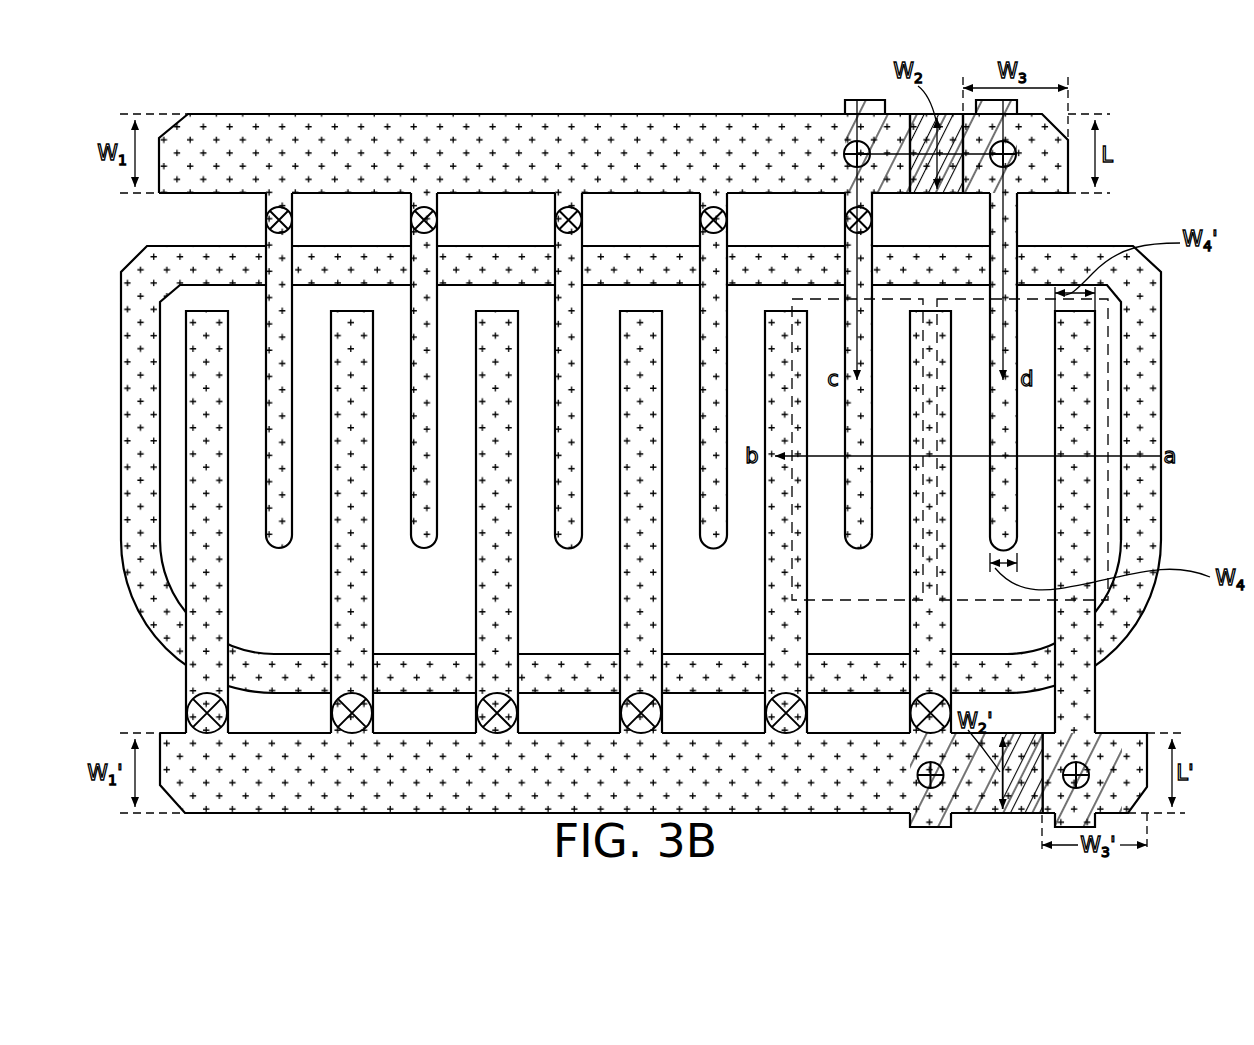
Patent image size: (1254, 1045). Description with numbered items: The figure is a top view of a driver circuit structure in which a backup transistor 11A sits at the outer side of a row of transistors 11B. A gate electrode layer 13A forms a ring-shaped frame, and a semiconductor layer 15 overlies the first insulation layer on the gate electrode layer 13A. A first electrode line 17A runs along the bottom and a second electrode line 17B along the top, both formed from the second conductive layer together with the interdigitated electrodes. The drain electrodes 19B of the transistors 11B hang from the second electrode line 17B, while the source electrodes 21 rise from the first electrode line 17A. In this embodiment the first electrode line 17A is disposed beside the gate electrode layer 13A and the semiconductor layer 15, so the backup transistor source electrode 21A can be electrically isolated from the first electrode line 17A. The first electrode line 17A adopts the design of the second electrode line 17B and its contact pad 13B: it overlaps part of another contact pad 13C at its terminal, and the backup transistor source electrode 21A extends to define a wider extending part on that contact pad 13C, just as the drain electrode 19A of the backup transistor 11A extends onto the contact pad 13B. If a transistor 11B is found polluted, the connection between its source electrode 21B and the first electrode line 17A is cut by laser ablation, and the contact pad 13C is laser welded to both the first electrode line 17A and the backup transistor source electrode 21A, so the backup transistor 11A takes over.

The backup transistor 11A is at (1162, 380).
The transistors 11B is at (965, 603).
The gate electrode layer 13A is at (1162, 297).
The contact pad 13B is at (947, 113).
The another contact pad 13C is at (963, 813).
The semiconductor layer 15 is at (1121, 506).
The first electrode line 17A is at (1133, 733).
The second electrode line 17B is at (341, 113).
The drain electrode of the backup transistor 19A is at (1017, 323).
The drain electrodes 19B is at (871, 322).
The source electrodes 21 is at (785, 311).
The backup transistor source electrode 21A is at (1078, 300).
The source electrode of the polluted transistor 21B is at (929, 311).